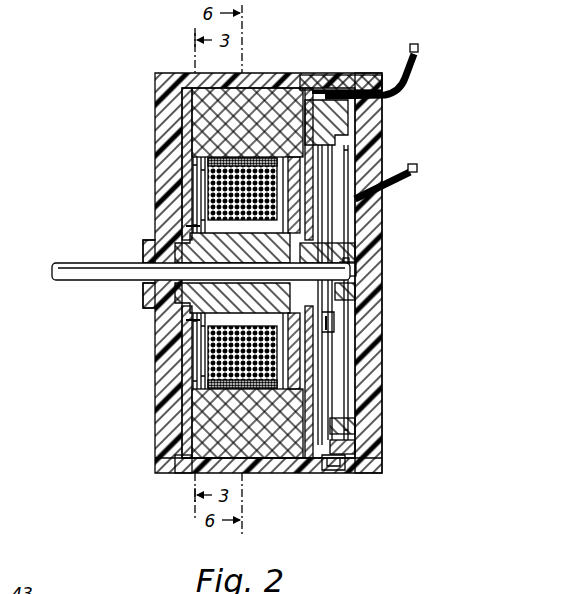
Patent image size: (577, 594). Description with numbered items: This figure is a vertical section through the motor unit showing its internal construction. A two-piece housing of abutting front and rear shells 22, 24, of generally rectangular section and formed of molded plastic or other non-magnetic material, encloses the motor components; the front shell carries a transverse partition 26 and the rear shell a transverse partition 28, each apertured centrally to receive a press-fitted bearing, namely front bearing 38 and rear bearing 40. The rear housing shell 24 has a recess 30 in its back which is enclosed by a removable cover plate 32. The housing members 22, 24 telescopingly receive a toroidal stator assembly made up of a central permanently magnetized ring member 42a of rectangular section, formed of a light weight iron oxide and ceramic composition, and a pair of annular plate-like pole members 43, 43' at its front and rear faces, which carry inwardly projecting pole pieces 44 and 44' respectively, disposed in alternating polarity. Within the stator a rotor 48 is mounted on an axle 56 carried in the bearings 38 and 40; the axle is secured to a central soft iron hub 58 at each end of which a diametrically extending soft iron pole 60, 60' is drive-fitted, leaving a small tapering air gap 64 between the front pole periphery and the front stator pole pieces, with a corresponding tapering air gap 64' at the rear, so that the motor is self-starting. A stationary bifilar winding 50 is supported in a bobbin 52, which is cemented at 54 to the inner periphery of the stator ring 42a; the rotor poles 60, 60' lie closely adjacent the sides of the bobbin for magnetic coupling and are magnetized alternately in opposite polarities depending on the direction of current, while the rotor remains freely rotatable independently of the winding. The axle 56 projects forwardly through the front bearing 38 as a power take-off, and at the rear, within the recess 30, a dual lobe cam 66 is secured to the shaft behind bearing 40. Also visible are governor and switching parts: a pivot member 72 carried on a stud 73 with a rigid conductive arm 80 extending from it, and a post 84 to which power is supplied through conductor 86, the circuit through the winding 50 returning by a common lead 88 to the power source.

The front housing shell 22 is at (172, 73).
The rear housing shell 24 is at (303, 76).
The front transverse partition 26 is at (150, 242).
The rear transverse partition 28 is at (360, 222).
The recess 30 is at (333, 472).
The cover plate 32 is at (372, 458).
The front bearing 38 is at (150, 288).
The rear bearing 40 is at (328, 254).
The stator ring member 42a is at (240, 117).
The front pole member 43 is at (143, 292).
The rear pole member 43' is at (345, 264).
The front stator pole piece 44 is at (181, 264).
The rear stator pole piece 44' is at (343, 282).
The rotor 48 is at (234, 263).
The winding 50 is at (200, 182).
The bobbin 52 is at (185, 320).
The cement 54 is at (200, 442).
The axle 56 is at (85, 276).
The hub 58 is at (345, 264).
The front rotor pole 60 is at (114, 292).
The rear rotor pole 60' is at (377, 321).
The air gap 64 is at (118, 274).
The conductor strip 64' is at (386, 292).
The dual lobe cam 66 is at (355, 290).
The pivot member 72 is at (355, 448).
The stud 73 is at (355, 428).
The pivot arm 80 is at (340, 362).
The post 84 is at (352, 105).
The power conductor 86 is at (418, 58).
The common return lead 88 is at (415, 180).